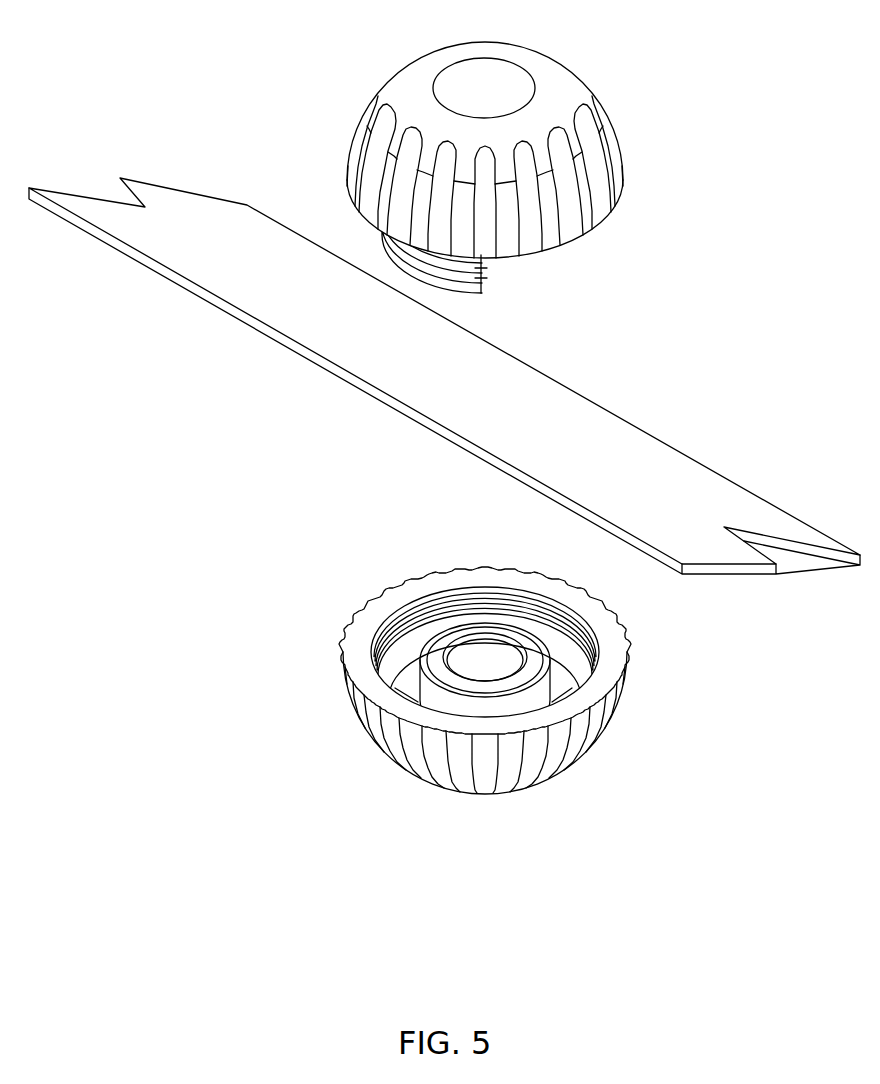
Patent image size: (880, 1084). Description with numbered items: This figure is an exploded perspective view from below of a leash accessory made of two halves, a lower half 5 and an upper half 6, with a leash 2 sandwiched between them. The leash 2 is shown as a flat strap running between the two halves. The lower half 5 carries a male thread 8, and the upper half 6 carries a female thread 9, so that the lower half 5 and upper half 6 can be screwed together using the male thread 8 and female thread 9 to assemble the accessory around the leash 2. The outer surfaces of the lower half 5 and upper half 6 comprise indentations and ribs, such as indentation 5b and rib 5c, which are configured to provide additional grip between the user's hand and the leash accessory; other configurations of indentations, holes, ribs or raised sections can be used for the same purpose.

The leash 2 is at (652, 435).
The lower half 5 is at (542, 172).
The indentation 5b is at (575, 188).
The rib 5c is at (592, 177).
The male thread 8 is at (481, 268).
The upper half 6 is at (427, 715).
The female thread 9 is at (413, 623).